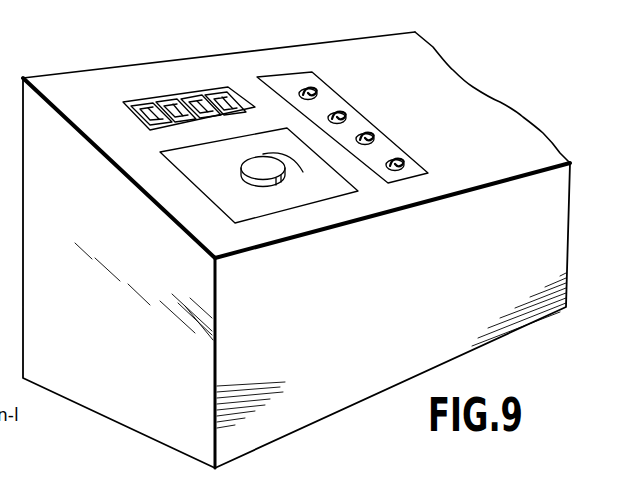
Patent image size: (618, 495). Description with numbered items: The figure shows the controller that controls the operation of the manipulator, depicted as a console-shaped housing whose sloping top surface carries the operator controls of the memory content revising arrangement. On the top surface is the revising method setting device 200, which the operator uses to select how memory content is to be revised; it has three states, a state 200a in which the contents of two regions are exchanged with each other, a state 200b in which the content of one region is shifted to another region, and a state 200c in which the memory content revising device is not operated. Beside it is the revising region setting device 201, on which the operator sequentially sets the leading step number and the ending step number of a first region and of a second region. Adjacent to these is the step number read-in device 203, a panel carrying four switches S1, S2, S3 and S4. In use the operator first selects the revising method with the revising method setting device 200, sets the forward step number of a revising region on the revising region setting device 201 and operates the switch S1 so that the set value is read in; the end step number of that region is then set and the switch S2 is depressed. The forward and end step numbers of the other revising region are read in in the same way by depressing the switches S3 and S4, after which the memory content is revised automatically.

The revising method setting device 200 is at (302, 221).
The revising region setting device 201 is at (188, 93).
The exchange state of the revising method setting device 200a is at (230, 165).
The shift state of the revising method setting device 200b is at (240, 157).
The non-operation state of the revising method setting device 200c is at (303, 172).
The step number read-in device 203 is at (344, 82).
The switch S1 is at (320, 88).
The switch S2 is at (346, 118).
The switch S3 is at (374, 140).
The switch S4 is at (404, 165).